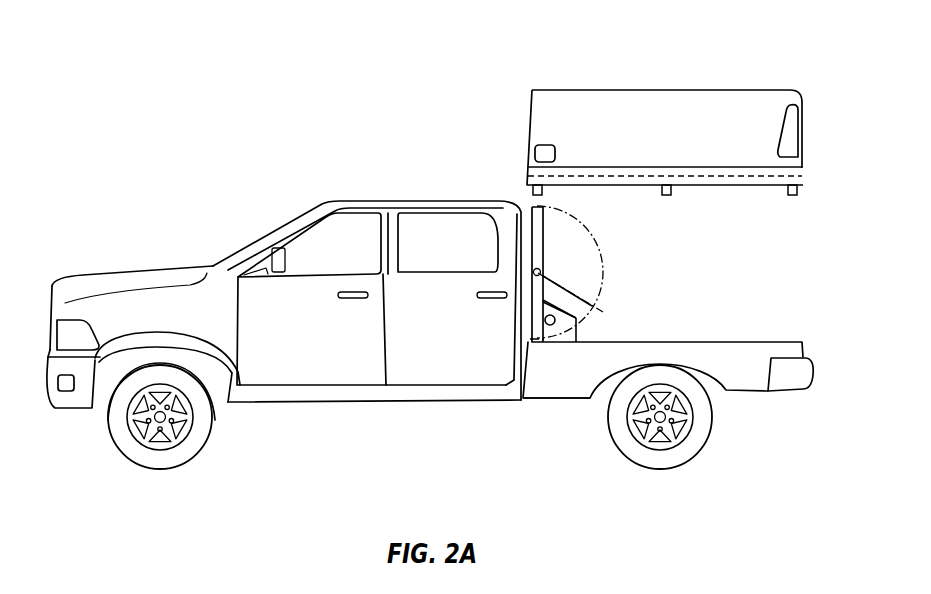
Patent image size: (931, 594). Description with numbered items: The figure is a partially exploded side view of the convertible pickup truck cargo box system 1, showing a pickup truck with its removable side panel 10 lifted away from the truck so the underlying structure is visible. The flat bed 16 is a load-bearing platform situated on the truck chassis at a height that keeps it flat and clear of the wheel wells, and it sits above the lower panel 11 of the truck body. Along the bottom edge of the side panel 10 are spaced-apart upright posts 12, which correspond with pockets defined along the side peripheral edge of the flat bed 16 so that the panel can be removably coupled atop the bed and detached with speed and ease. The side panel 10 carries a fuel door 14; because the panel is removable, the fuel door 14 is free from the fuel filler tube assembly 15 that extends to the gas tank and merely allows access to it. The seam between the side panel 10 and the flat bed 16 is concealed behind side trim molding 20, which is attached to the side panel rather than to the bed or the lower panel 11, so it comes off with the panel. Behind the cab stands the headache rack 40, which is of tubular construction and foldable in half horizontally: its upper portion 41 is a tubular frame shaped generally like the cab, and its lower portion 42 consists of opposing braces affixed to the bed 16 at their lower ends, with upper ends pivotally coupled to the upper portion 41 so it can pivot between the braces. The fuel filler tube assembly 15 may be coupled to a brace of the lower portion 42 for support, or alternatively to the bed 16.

The convertible pickup truck cargo box system 1 is at (193, 190).
The removable side panel 10 is at (690, 118).
The lower panel 11 is at (565, 400).
The upright post 12 is at (542, 190).
The fuel door 14 is at (535, 153).
The fuel filler tube assembly 15 is at (547, 313).
The flat bed 16 is at (751, 343).
The side trim molding 20 is at (753, 186).
The headache rack 40 is at (603, 263).
The upper portion of headache rack 41 is at (542, 249).
The lower portion of headache rack 42 is at (545, 339).